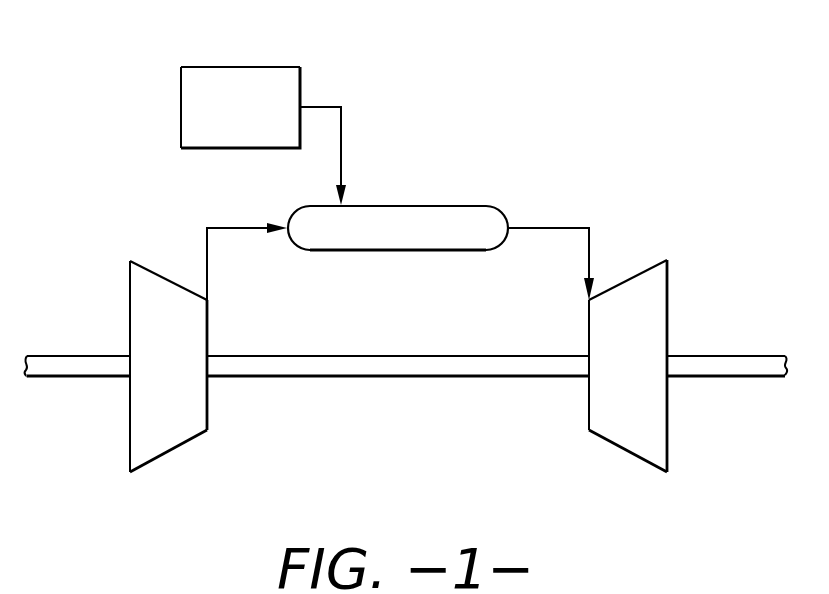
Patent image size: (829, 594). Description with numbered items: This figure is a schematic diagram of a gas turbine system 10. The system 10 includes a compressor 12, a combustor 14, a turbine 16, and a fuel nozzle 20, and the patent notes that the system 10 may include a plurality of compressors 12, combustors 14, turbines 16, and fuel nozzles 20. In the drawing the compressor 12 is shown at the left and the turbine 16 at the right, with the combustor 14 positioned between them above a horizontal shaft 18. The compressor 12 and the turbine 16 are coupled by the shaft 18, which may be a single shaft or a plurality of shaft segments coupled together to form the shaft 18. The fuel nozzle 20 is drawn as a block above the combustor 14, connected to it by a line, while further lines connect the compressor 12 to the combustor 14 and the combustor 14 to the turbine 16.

The gas turbine system 10 is at (610, 82).
The compressor 12 is at (128, 283).
The combustor 14 is at (442, 205).
The turbine 16 is at (668, 283).
The shaft 18 is at (350, 378).
The fuel nozzle 20 is at (243, 66).